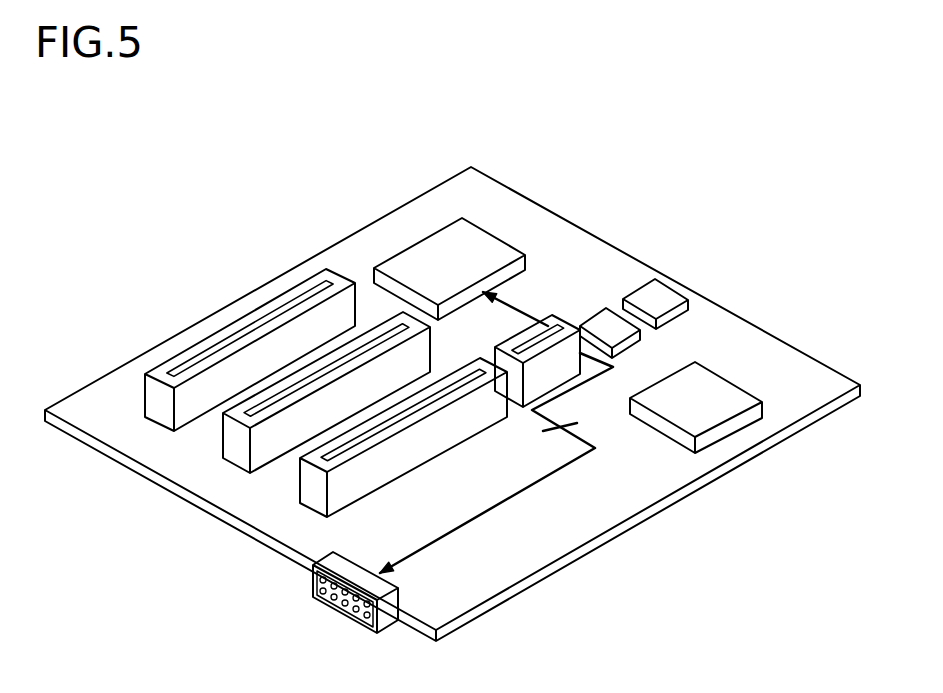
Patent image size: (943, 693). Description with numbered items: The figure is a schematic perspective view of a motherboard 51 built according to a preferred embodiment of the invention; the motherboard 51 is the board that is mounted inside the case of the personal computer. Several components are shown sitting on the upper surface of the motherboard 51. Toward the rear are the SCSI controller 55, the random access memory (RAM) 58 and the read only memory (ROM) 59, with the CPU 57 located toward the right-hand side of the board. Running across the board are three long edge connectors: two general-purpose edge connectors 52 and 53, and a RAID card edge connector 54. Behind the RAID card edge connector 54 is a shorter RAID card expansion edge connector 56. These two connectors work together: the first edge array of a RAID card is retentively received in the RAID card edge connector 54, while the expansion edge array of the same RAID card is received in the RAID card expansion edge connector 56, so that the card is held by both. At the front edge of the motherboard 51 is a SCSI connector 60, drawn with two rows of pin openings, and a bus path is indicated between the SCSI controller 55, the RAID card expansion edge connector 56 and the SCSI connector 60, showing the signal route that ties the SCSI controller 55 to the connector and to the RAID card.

The motherboard 51 is at (340, 247).
The edge connector 52 is at (145, 414).
The edge connector 53 is at (225, 460).
The RAID card edge connector 54 is at (300, 502).
The SCSI controller 55 is at (487, 246).
The RAID card expansion edge connector 56 is at (552, 314).
The CPU 57 is at (732, 380).
The random access memory (RAM) 58 is at (607, 306).
The read only memory (ROM) 59 is at (653, 279).
The SCSI connector 60 is at (313, 598).